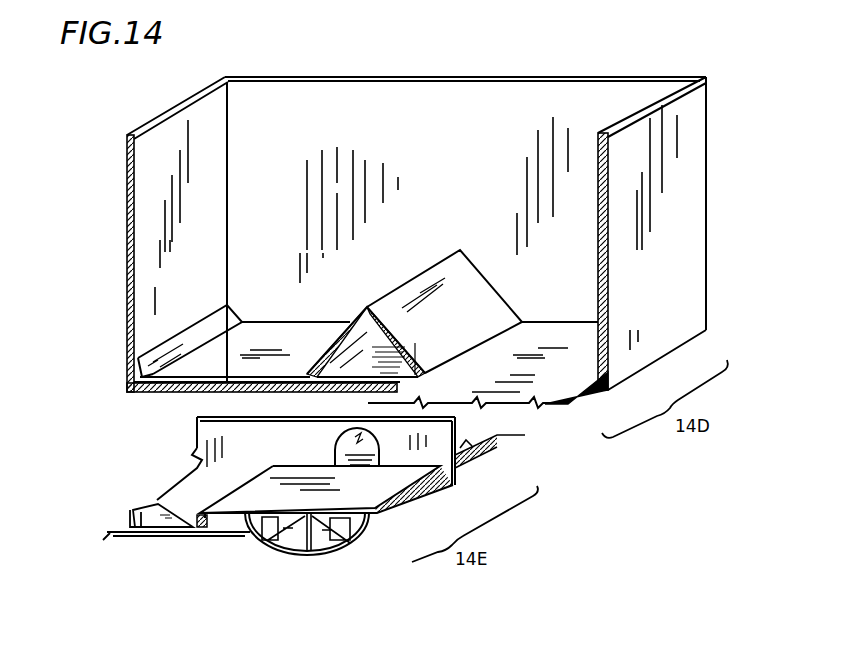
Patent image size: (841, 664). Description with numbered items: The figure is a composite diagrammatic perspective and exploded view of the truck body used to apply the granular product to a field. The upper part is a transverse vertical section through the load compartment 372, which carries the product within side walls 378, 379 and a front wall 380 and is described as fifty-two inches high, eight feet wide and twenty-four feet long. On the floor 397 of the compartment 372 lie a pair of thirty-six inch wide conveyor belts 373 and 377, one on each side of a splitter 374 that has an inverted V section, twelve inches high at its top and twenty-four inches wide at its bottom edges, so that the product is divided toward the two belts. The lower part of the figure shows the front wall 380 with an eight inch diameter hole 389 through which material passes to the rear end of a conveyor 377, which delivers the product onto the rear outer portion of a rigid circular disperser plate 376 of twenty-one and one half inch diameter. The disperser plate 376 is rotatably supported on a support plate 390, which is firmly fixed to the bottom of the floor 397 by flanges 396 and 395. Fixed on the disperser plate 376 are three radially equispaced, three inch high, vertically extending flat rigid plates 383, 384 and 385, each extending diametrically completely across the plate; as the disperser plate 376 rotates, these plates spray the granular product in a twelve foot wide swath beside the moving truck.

The load compartment 372 is at (438, 108).
The side wall 379 is at (172, 130).
The front wall 380 is at (541, 96).
The side wall 378 is at (697, 138).
The conveyor belt 373 is at (310, 305).
The floor 397 is at (366, 375).
The splitter 374 is at (457, 253).
The conveyor belt 377 is at (574, 305).
The hole 389 is at (336, 448).
The flange 396 is at (158, 505).
The flange 395 is at (127, 525).
The support plate 390 is at (203, 533).
The flat rigid plate 385 is at (360, 538).
The flat rigid plate 383 is at (281, 540).
The flat rigid plate 384 is at (316, 548).
The disperser plate 376 is at (333, 545).